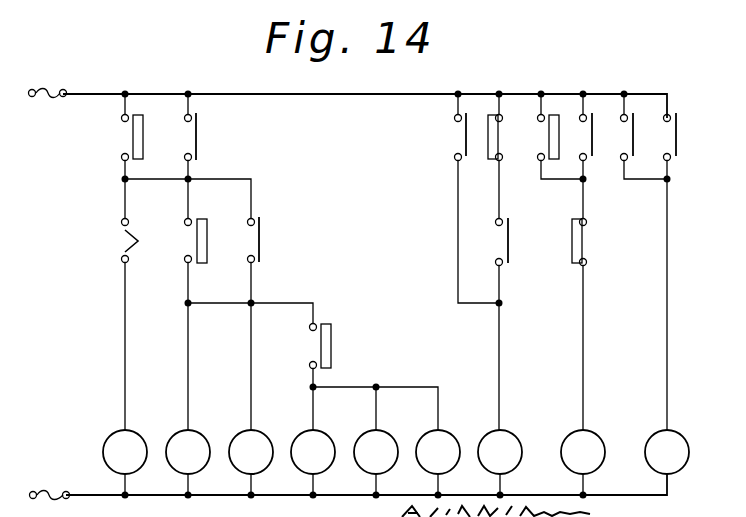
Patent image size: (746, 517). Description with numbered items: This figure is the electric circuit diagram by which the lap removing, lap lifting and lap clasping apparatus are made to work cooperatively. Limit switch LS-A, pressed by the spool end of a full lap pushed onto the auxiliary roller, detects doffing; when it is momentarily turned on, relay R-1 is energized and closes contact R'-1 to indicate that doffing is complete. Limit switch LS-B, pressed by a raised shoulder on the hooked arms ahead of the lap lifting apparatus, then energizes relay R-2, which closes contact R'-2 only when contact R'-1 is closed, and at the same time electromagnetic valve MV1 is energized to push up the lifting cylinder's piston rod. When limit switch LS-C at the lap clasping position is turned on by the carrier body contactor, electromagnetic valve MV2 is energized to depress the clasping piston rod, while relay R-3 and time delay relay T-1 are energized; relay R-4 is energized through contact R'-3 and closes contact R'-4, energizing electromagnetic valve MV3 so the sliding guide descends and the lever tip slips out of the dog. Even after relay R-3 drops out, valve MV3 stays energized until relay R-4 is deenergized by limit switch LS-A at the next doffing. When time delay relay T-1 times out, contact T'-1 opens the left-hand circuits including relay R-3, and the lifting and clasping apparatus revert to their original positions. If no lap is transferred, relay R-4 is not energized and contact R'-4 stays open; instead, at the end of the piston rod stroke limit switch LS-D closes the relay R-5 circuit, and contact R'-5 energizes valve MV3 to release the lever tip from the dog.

The limit switch LS-A is at (377, 192).
The contact R'-1 is at (212, 145).
The contact T'-1 is at (144, 244).
The limit switch LS-B is at (218, 244).
The contact R'-2 is at (276, 242).
The limit switch LS-C is at (344, 349).
The contact R'-3 is at (477, 149).
The limit switch LS-D is at (564, 149).
The contact R'-5 is at (648, 149).
The relay R-4 is at (570, 293).
The contact R'-4 is at (523, 243).
The relay R-1 is at (125, 452).
The relay R-2 is at (188, 452).
The electromagnetic valve MV1 is at (251, 452).
The electromagnetic valve MV2 is at (313, 452).
The time delay relay T-1 is at (376, 452).
The relay R-3 is at (438, 452).
The relay R-5 is at (583, 452).
The electromagnetic valve MV3 is at (667, 452).